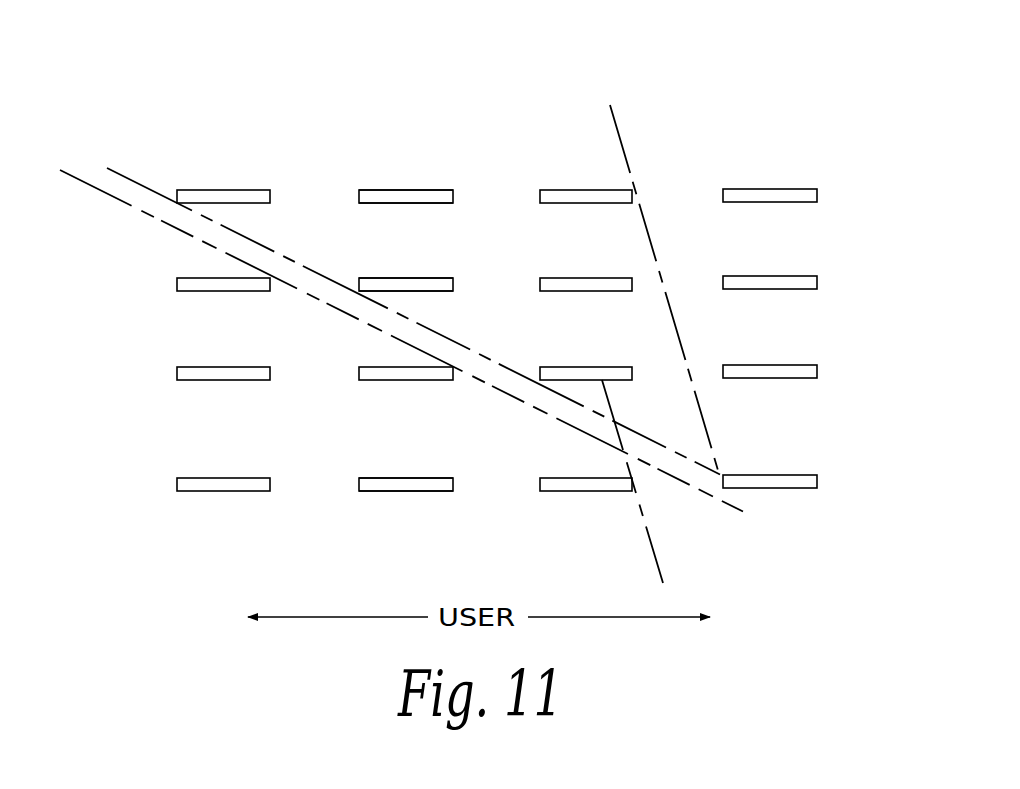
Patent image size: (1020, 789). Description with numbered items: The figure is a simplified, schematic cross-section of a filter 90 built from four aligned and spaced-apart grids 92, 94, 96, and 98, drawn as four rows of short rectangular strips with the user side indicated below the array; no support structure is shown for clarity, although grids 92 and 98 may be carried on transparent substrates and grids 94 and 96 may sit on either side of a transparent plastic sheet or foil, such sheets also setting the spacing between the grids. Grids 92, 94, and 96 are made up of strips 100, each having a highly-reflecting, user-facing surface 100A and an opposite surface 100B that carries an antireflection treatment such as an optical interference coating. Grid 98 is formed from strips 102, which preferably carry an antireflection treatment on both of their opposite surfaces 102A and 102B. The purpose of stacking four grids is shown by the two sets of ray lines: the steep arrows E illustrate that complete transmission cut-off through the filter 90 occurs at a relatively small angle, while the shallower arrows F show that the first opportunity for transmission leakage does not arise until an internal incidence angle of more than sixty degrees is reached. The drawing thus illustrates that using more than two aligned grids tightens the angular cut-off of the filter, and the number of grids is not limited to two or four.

The filter 90 is at (772, 102).
The grid 92 is at (784, 176).
The grid 94 is at (784, 261).
The grid 96 is at (784, 351).
The grid 98 is at (784, 464).
The strip 100 is at (244, 184).
The user-facing surface 100A is at (423, 204).
The opposite surface 100B is at (418, 189).
The strip 102 is at (197, 472).
The surface 102A is at (427, 492).
The surface 102B is at (401, 476).
The arrows E is at (703, 413).
The arrows F is at (648, 438).